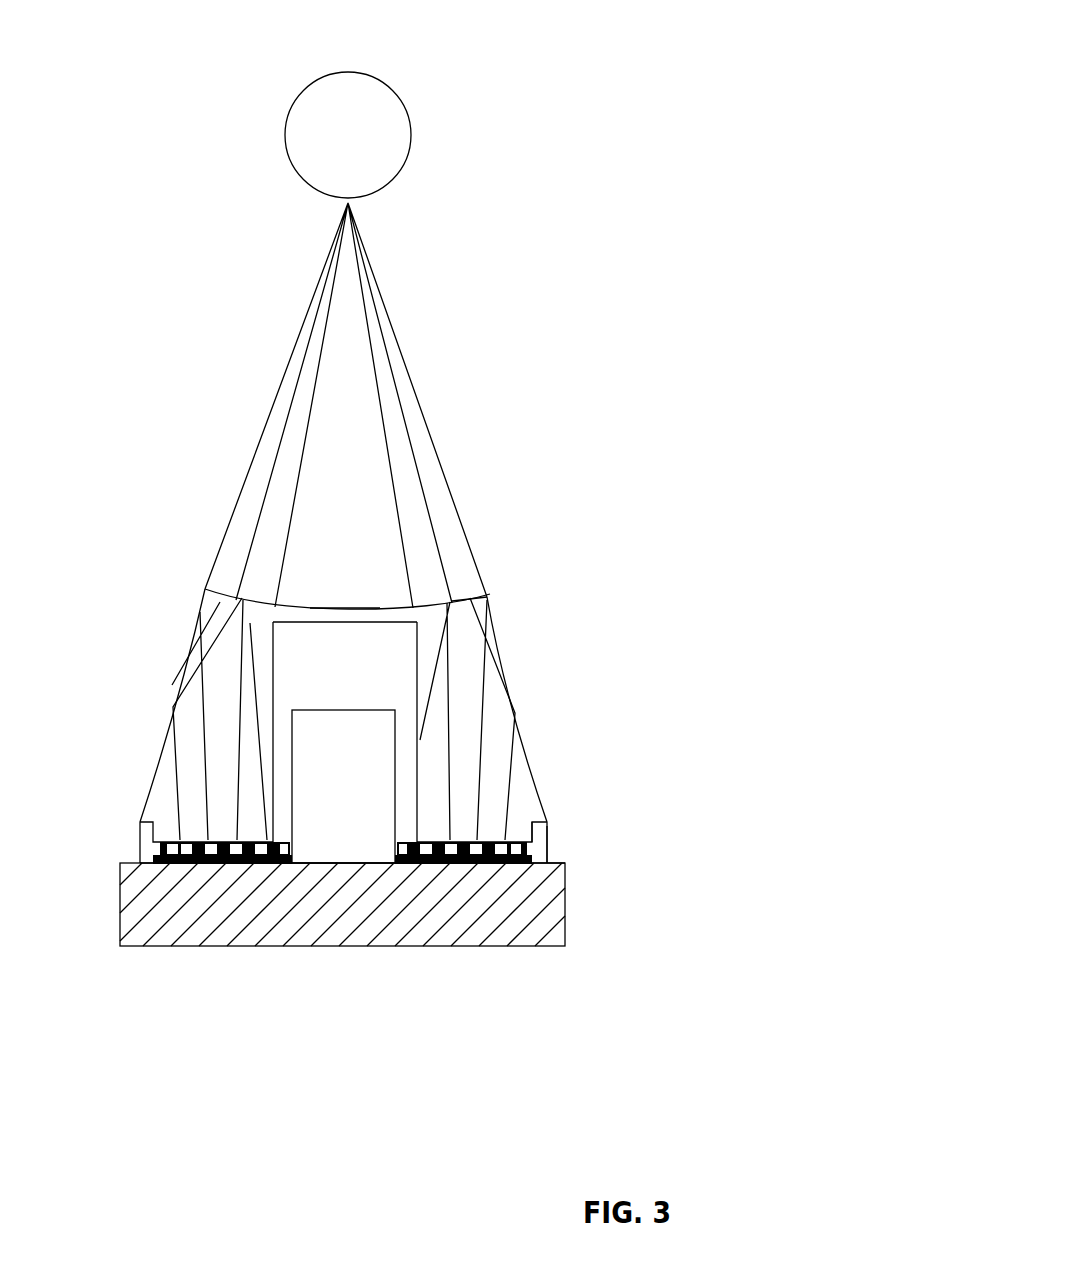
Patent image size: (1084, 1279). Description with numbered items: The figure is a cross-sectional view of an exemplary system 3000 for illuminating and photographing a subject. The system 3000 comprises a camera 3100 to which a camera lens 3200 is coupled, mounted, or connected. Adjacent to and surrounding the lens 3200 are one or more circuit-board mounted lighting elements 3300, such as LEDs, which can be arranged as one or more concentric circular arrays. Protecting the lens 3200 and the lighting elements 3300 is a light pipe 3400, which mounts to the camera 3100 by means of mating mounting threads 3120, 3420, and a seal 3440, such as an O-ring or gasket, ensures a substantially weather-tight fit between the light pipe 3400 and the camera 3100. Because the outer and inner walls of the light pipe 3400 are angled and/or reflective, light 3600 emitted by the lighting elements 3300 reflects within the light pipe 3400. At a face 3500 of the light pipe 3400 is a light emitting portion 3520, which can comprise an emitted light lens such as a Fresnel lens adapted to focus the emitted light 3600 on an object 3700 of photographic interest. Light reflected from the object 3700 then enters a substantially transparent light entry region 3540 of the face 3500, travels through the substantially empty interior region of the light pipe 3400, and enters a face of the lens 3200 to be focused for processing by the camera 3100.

The system 3000 is at (381, 25).
The camera 3100 is at (565, 918).
The mounting threads 3120 is at (154, 848).
The camera lens 3200 is at (344, 824).
The lighting elements 3300 is at (467, 866).
The light pipe 3400 is at (550, 775).
The mounting threads 3420 is at (463, 853).
The seal 3440 is at (549, 832).
The face 3500 is at (490, 598).
The light emitting portion 3520 is at (468, 586).
The light entry region 3540 is at (349, 606).
The light 3600 is at (402, 330).
The object 3700 is at (358, 142).